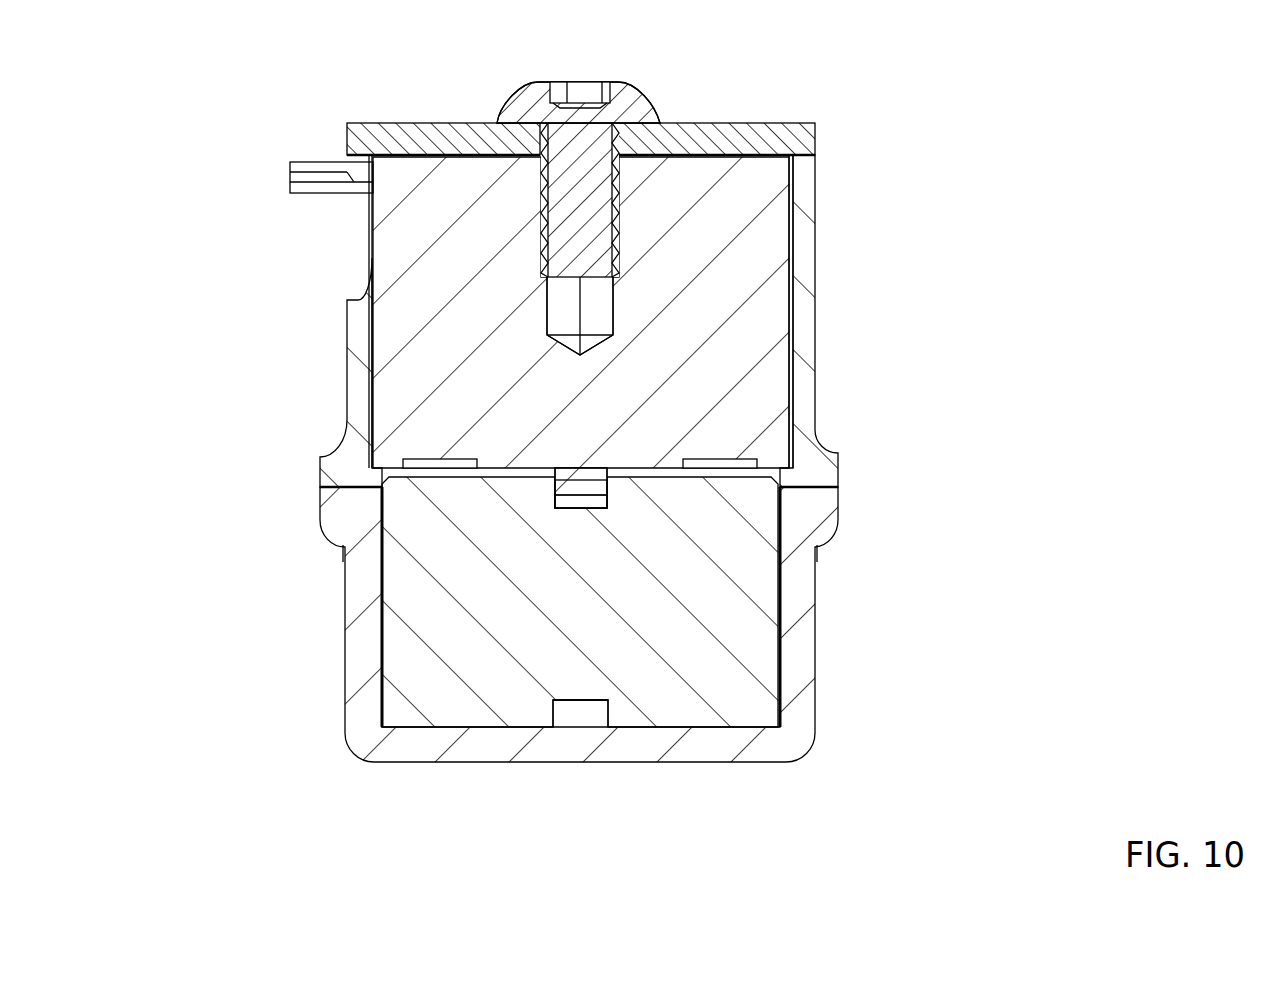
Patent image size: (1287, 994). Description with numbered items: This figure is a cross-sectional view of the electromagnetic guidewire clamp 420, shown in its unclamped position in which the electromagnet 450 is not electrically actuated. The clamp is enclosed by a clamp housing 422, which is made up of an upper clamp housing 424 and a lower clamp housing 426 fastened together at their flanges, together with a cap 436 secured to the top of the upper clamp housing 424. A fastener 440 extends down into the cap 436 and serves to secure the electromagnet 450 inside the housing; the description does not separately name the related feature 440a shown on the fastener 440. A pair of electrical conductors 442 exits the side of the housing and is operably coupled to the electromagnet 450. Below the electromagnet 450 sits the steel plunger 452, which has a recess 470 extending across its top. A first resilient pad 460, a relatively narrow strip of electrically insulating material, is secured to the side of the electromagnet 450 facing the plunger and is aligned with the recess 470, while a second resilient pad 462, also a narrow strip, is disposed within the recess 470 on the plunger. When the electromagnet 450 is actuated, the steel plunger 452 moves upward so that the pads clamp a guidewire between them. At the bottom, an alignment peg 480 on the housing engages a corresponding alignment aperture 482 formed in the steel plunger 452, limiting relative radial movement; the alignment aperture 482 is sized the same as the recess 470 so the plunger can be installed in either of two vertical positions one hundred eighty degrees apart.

The electromagnetic guidewire clamp 420 is at (595, 410).
The clamp housing 422 is at (678, 458).
The upper clamp housing 424 is at (816, 316).
The lower clamp housing 426 is at (815, 640).
The cap 436 is at (682, 118).
The fastener 440 is at (530, 63).
The pilot hole 440a is at (613, 303).
The electrical conductors 442 is at (265, 147).
The electromagnet 450 is at (718, 391).
The steel plunger 452 is at (650, 598).
The first resilient pad 460 is at (598, 467).
The recess 470 is at (606, 488).
The second resilient pad 462 is at (608, 500).
The alignment peg 480 is at (590, 718).
The alignment aperture 482 is at (581, 700).